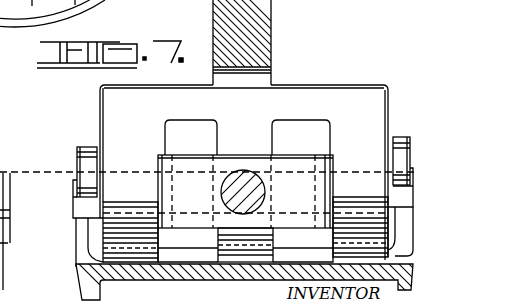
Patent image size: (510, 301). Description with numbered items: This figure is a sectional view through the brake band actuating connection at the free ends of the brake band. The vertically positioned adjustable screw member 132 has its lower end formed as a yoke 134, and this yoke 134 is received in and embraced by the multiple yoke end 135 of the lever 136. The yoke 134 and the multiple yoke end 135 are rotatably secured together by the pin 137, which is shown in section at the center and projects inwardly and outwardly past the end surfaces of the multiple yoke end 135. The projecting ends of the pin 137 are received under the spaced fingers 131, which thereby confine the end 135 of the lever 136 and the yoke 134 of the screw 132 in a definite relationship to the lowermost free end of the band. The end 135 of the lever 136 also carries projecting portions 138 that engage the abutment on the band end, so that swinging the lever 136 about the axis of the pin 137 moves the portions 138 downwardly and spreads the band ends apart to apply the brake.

The fingers 131 is at (398, 150).
The adjustable screw member 132 is at (257, 194).
The yoke 134 is at (245, 208).
The multiple yoke end 135 is at (306, 93).
The lever 136 is at (264, 30).
The pin 137 is at (28, 217).
The projecting portions 138 is at (240, 254).